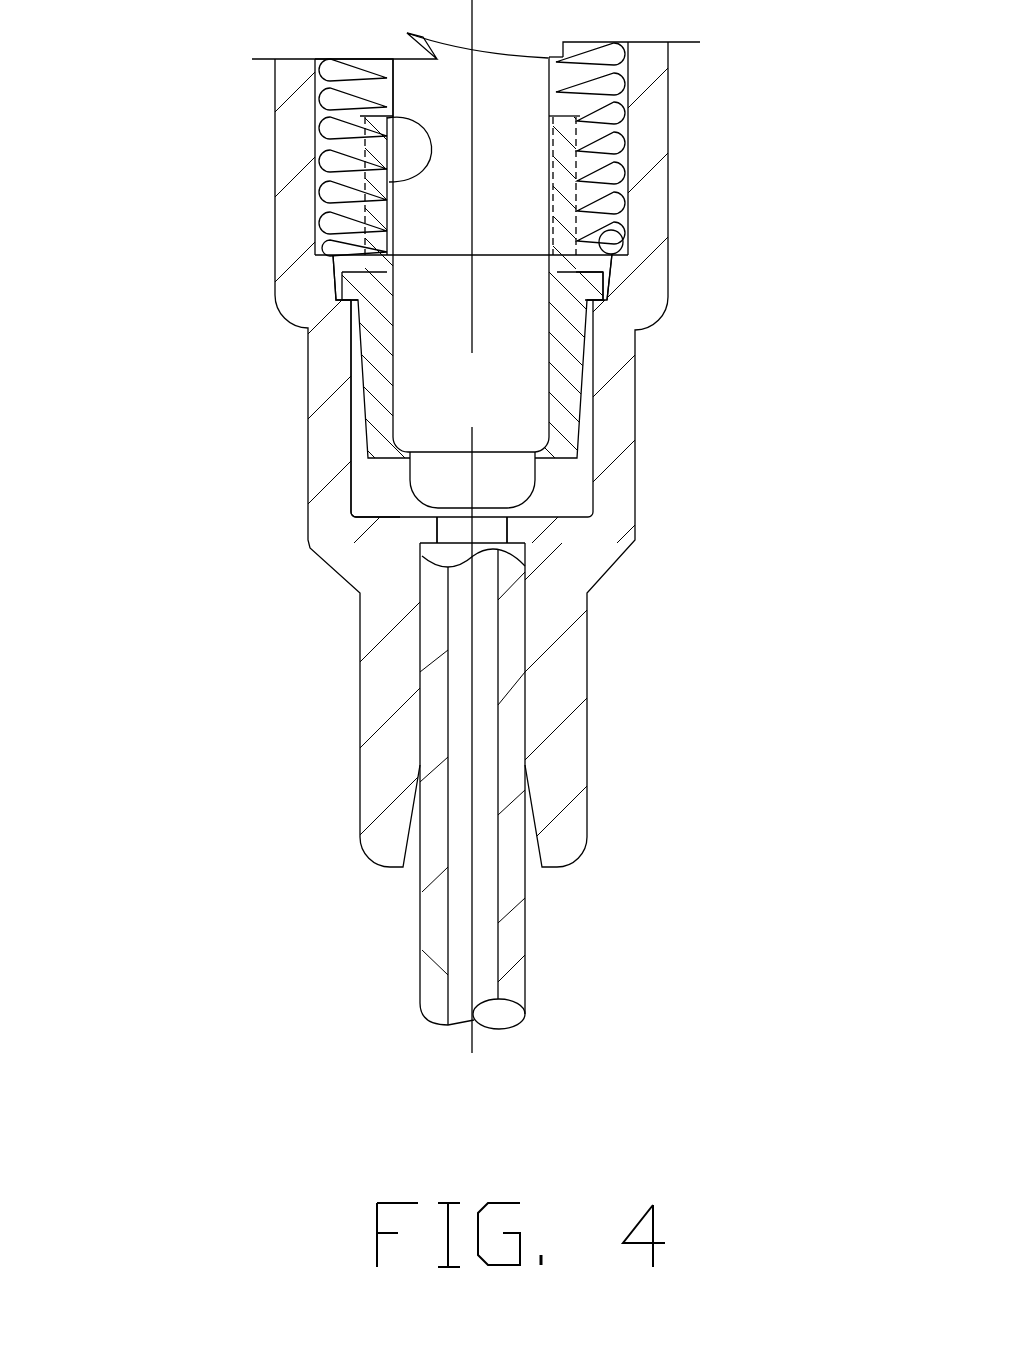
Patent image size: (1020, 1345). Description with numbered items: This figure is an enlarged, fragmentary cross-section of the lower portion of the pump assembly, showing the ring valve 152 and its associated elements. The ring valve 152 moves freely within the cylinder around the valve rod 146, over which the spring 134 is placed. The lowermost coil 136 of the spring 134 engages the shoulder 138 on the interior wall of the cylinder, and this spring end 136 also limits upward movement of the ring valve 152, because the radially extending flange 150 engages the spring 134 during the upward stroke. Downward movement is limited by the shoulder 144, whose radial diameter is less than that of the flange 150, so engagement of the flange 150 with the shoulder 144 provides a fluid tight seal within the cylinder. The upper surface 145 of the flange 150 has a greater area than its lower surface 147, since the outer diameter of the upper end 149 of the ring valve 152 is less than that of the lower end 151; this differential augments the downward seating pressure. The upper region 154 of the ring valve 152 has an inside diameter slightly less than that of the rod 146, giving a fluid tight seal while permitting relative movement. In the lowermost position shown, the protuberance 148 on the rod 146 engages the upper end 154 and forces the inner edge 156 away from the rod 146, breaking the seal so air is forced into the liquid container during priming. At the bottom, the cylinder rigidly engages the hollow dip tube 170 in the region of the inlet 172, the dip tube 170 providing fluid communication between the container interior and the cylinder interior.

The spring 134 is at (607, 80).
The lowermost coil 136 is at (612, 240).
The shoulder 138 is at (627, 262).
The shoulder 144 is at (637, 334).
The upper surface 145 is at (360, 272).
The valve rod 146 is at (513, 412).
The lower surface 147 is at (355, 352).
The protuberance 148 is at (373, 62).
The upper end 149 is at (380, 267).
The flange 150 is at (590, 288).
The lower end 151 is at (573, 358).
The ring valve 152 is at (570, 383).
The upper region 154 is at (558, 124).
The inner edge 156 is at (390, 118).
The dip tube 170 is at (563, 767).
The inlet 172 is at (497, 532).